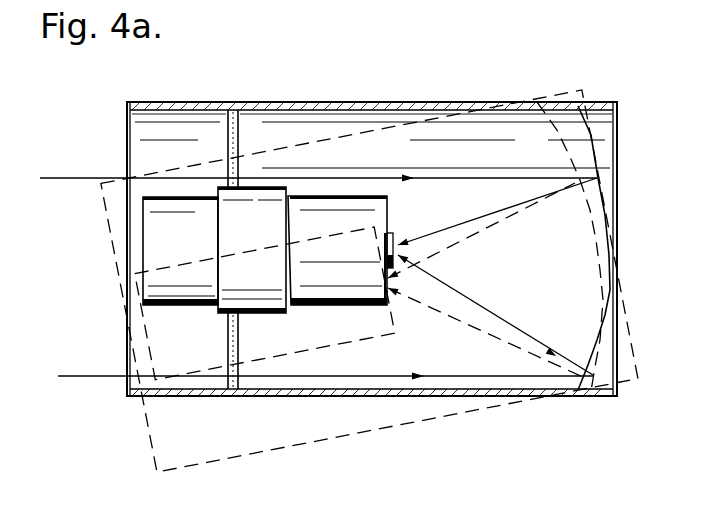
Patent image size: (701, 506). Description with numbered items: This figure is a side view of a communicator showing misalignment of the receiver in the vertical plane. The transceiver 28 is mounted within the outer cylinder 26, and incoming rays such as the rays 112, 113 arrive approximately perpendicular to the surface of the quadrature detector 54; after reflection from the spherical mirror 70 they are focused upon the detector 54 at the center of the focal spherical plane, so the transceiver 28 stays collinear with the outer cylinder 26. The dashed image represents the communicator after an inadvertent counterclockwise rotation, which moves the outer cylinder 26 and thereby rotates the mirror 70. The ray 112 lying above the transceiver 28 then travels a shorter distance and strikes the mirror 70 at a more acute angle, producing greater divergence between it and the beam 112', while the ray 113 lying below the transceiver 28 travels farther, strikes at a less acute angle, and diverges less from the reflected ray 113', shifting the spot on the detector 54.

The outer cylinder 26 is at (290, 103).
The transceiver 28 is at (388, 201).
The quadrature detector 54 is at (394, 233).
The spherical mirror 70 is at (581, 390).
The ray 112 is at (317, 163).
The ray 113 is at (319, 361).
The beam 112' is at (497, 211).
The reflected ray 113' is at (495, 315).